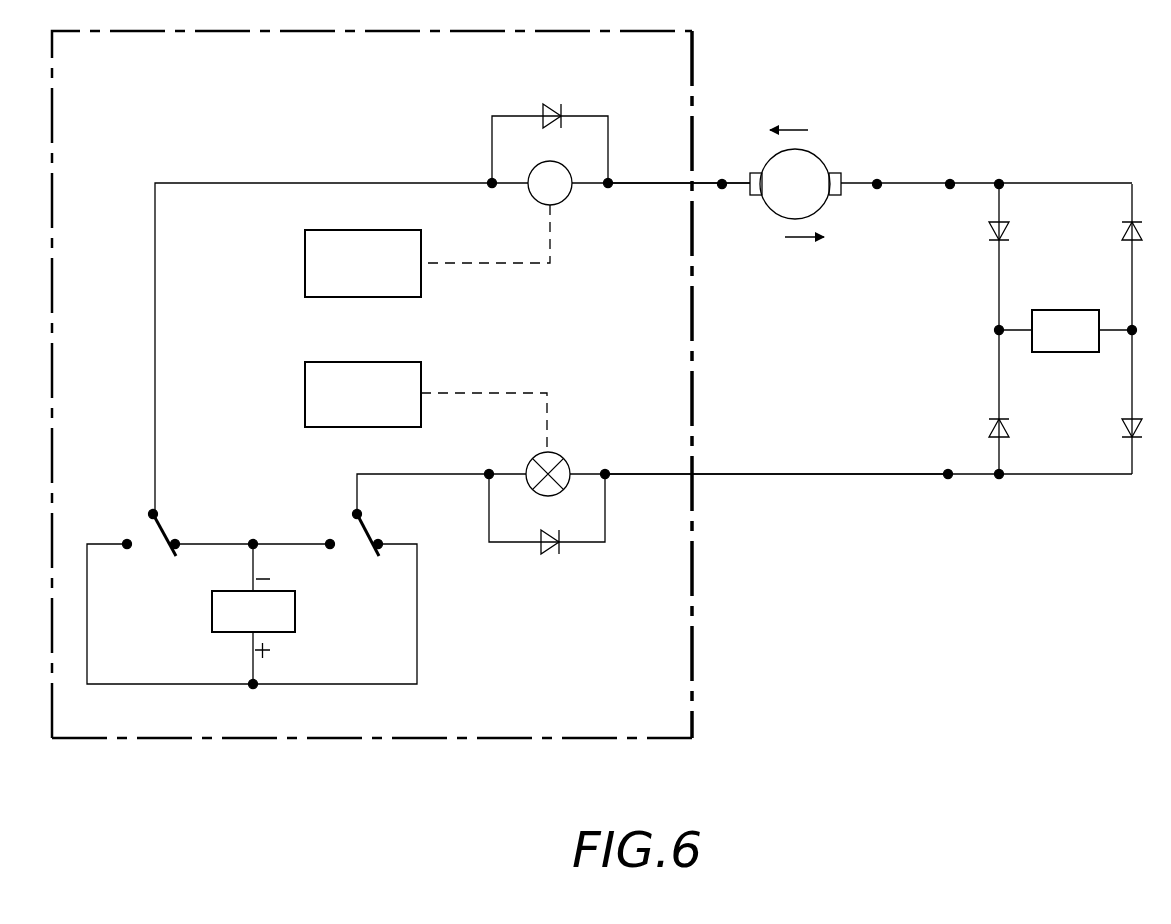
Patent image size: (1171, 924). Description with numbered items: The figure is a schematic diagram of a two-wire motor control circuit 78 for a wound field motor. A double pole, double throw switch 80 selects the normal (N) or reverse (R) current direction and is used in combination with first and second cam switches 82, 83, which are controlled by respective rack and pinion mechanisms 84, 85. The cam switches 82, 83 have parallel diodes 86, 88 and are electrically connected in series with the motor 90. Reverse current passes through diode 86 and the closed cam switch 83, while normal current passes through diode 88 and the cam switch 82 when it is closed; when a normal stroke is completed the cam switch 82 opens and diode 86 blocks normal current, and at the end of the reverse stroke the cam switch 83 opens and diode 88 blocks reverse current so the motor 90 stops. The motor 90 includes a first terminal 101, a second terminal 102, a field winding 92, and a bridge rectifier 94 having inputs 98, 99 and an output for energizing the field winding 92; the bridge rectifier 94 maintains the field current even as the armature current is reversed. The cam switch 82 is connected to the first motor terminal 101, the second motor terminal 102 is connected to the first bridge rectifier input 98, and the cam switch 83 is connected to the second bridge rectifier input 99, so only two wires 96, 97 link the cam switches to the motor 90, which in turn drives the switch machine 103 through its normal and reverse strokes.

The two-wire motor control circuit 78 is at (690, 702).
The double pole, double throw switch 80 is at (422, 645).
The first cam switch 82 is at (538, 200).
The second cam switch 83 is at (534, 458).
The rack and pinion mechanism 84 is at (305, 277).
The rack and pinion mechanism 85 is at (305, 405).
The diode 86 is at (548, 106).
The diode 88 is at (542, 553).
The motor 90 is at (769, 164).
The field winding 92 is at (1047, 310).
The bridge rectifier 94 is at (1118, 453).
The wire 96 is at (663, 183).
The wire 97 is at (658, 477).
The first bridge rectifier input 98 is at (950, 178).
The second bridge rectifier input 99 is at (948, 480).
The first terminal 101 is at (722, 190).
The second terminal 102 is at (877, 190).
The switch machine 103 is at (880, 106).